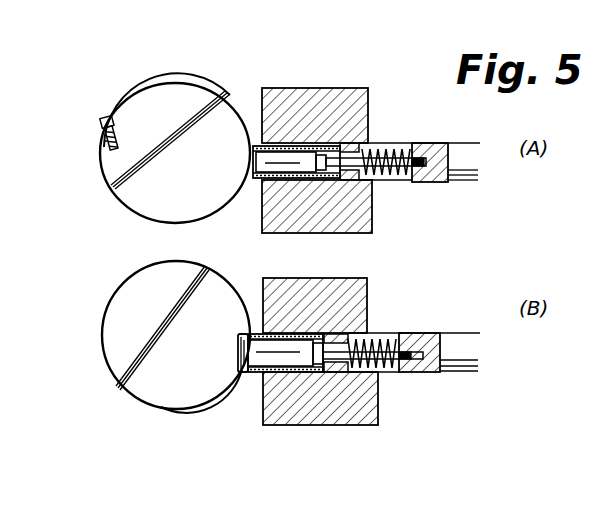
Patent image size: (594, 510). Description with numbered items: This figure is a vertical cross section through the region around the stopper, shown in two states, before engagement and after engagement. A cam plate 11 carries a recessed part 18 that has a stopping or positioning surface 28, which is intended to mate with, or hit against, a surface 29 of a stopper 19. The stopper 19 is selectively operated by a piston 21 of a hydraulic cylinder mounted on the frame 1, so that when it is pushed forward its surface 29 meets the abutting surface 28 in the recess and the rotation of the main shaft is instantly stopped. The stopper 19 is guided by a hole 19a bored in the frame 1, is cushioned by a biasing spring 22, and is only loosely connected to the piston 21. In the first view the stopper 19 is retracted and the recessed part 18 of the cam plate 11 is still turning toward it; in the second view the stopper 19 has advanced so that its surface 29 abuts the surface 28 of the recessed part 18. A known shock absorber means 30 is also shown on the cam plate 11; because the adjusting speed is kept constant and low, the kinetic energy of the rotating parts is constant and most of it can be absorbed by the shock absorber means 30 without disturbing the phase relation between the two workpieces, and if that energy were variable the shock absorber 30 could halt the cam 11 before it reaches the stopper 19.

The frame 1 is at (328, 86).
The cam plate 11 is at (140, 86).
The recessed part 18 is at (188, 80).
The stopper 19 is at (290, 181).
The hole 19a is at (353, 373).
The piston 21 is at (430, 143).
The biasing spring 22 is at (383, 148).
The stopping or positioning surface 28 is at (112, 120).
The surface of the stopper 29 is at (256, 145).
The shock absorber means 30 is at (104, 141).